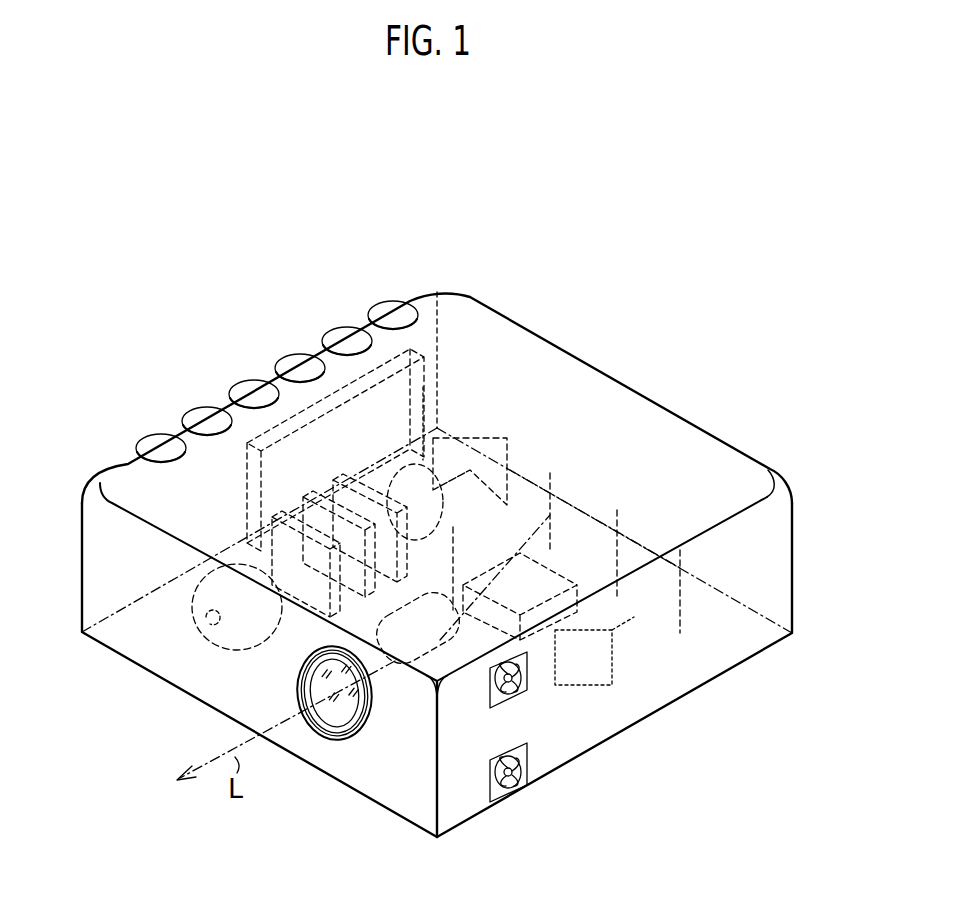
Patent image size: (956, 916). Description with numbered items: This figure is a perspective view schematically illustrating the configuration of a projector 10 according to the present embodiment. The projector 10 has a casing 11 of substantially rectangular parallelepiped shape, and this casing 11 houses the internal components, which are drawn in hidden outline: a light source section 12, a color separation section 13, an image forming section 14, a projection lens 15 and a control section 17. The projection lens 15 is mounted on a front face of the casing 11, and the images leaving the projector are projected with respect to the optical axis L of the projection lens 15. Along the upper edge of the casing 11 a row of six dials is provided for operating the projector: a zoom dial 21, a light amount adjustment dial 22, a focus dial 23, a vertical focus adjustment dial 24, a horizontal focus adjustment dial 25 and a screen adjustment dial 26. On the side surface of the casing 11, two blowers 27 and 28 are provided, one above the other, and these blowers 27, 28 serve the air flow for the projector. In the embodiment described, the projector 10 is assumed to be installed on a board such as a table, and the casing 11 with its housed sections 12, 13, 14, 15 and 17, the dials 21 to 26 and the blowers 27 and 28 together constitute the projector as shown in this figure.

The projector 10 is at (474, 251).
The casing 11 is at (585, 398).
The light source section 12 is at (172, 606).
The color separation section 13 is at (642, 508).
The image forming section 14 is at (625, 670).
The projection lens 15 is at (339, 718).
The control section 17 is at (432, 388).
The zoom dial 21 is at (150, 442).
The light amount adjustment dial 22 is at (196, 415).
The focus dial 23 is at (243, 388).
The vertical focus adjustment dial 24 is at (289, 362).
The horizontal focus adjustment dial 25 is at (336, 335).
The screen adjustment dial 26 is at (382, 309).
The blower 27 is at (522, 783).
The blower 28 is at (520, 687).